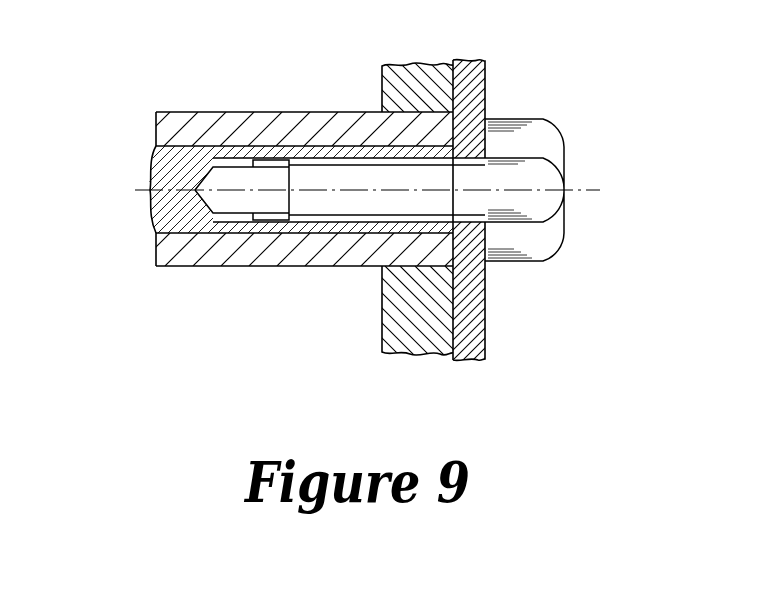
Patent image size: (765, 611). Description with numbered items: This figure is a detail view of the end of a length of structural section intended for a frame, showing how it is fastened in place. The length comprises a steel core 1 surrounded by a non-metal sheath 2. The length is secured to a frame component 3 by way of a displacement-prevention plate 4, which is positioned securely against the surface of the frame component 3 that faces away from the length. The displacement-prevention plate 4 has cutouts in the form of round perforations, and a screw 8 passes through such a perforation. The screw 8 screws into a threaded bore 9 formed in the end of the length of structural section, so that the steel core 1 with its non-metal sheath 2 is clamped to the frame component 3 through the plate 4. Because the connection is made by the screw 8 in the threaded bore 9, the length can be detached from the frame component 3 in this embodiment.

The steel core 1 is at (238, 233).
The non-metal sheath 2 is at (157, 128).
The frame component 3 is at (410, 85).
The displacement-prevention plate 4 is at (474, 87).
The screw 8 is at (547, 177).
The threaded bore 9 is at (233, 177).